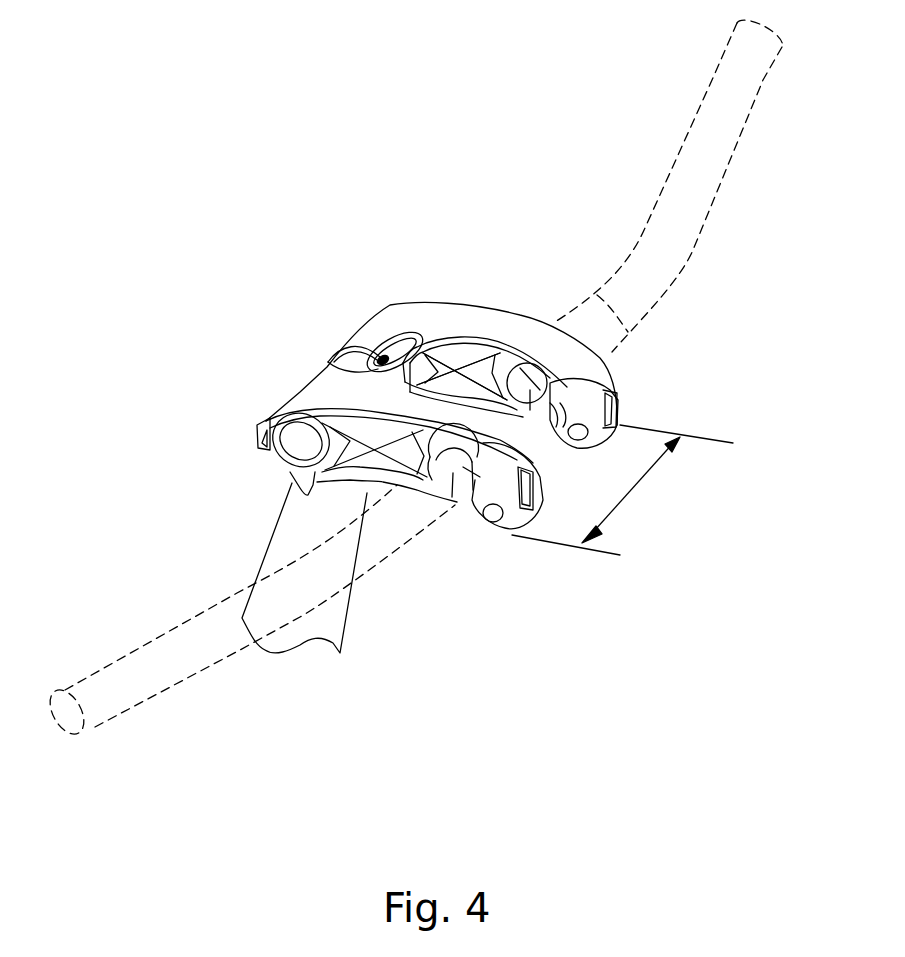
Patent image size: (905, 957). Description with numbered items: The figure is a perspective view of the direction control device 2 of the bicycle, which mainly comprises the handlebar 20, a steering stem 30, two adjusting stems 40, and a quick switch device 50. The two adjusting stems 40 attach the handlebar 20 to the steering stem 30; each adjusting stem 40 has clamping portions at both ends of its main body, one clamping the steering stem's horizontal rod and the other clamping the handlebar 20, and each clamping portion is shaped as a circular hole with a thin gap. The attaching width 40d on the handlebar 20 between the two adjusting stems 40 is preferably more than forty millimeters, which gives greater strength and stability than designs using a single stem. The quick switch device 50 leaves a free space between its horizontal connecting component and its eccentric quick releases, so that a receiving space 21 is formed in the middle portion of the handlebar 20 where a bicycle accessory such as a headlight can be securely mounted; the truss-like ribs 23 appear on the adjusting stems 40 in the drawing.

The direction control device 2 is at (733, 277).
The handlebar 20 is at (762, 61).
The receiving space 21 is at (523, 393).
The truss ribs 23 is at (453, 367).
The steering stem 30 is at (260, 475).
The adjusting stem 40 is at (553, 313).
The attaching width 40d is at (622, 490).
The quick switch device 50 is at (390, 309).